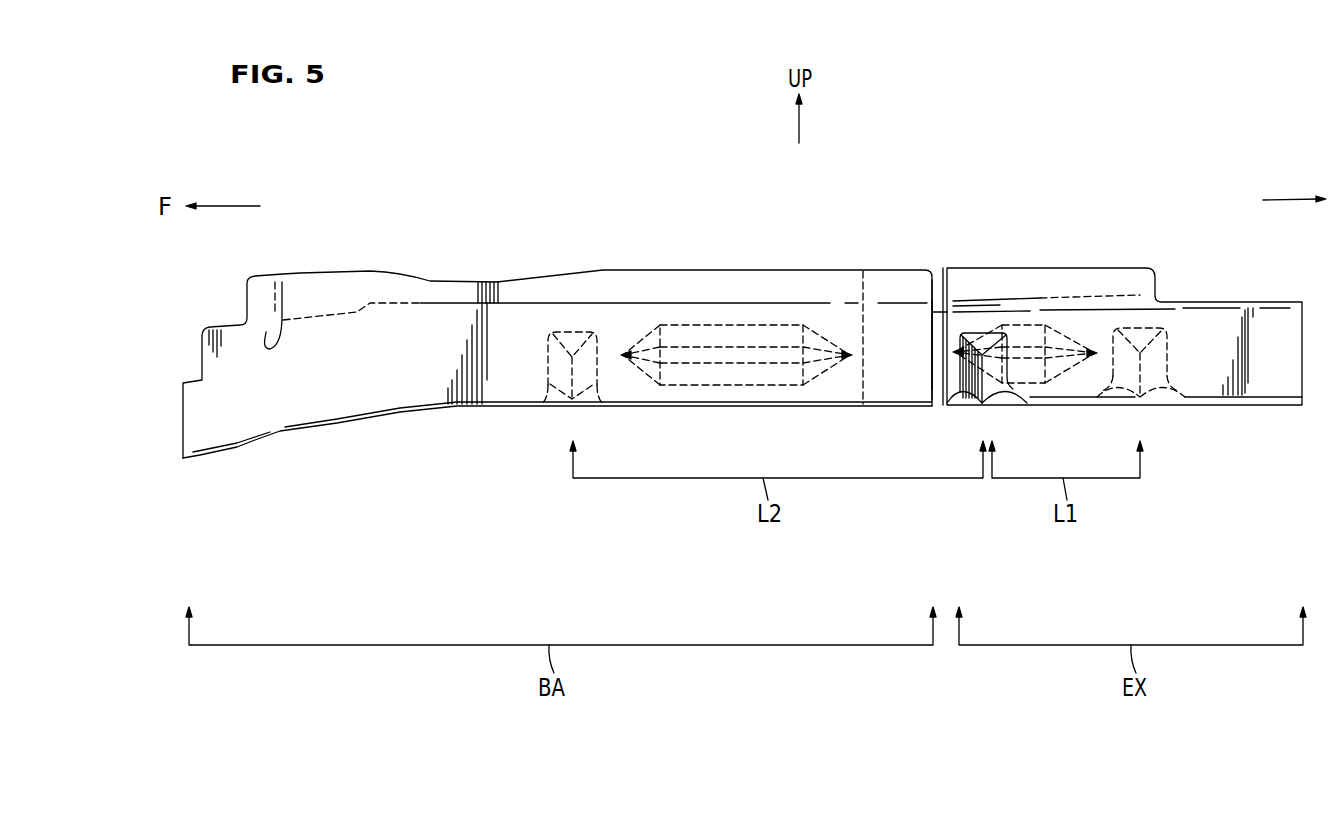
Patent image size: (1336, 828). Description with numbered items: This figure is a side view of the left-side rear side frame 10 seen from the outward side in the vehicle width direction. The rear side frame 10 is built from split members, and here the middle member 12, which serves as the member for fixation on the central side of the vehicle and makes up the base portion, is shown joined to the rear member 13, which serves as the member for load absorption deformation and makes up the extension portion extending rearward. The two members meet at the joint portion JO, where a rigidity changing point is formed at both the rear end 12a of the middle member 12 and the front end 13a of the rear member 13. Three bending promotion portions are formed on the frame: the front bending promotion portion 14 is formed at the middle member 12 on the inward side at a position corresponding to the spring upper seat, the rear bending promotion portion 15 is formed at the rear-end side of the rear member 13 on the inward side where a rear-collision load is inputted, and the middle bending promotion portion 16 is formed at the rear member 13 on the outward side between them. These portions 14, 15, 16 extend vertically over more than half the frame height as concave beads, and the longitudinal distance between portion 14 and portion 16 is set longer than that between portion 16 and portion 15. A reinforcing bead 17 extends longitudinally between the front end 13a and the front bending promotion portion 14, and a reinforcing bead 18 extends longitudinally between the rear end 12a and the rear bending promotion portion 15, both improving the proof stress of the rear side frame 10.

The left-side rear side frame 10 is at (647, 252).
The middle member 12 is at (531, 277).
The rear end of the middle member 12a is at (932, 382).
The rear member 13 is at (1053, 268).
The front end of the rear member 13a is at (863, 387).
The front bending promotion portion 14 is at (548, 380).
The rear bending promotion portion 15 is at (1167, 375).
The middle bending promotion portion 16 is at (962, 348).
The reinforcing bead 17 is at (738, 324).
The reinforcing bead 18 is at (1025, 323).
The joint portion JO is at (904, 256).